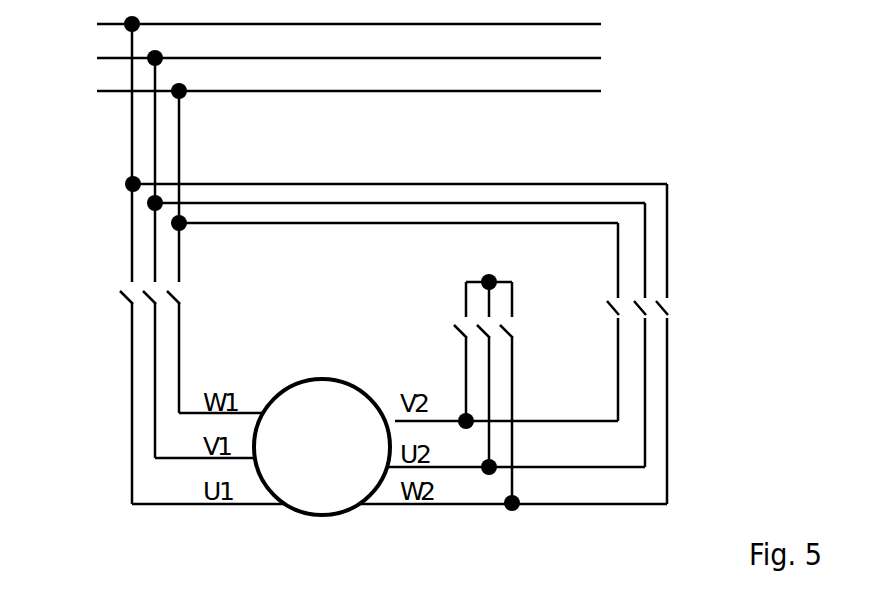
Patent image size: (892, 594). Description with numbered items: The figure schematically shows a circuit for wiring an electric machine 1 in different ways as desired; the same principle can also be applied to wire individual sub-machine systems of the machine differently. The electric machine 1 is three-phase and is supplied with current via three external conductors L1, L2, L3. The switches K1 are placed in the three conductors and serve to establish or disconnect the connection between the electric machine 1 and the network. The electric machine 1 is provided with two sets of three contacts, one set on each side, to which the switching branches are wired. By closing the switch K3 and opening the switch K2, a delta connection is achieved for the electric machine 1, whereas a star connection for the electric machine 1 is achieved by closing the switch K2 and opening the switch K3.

The electric machine 1 is at (333, 464).
The external conductor L1 is at (324, 17).
The external conductor L2 is at (324, 55).
The external conductor L3 is at (324, 90).
The switches K1 is at (130, 291).
The switch K2 is at (458, 306).
The switch K3 is at (657, 312).